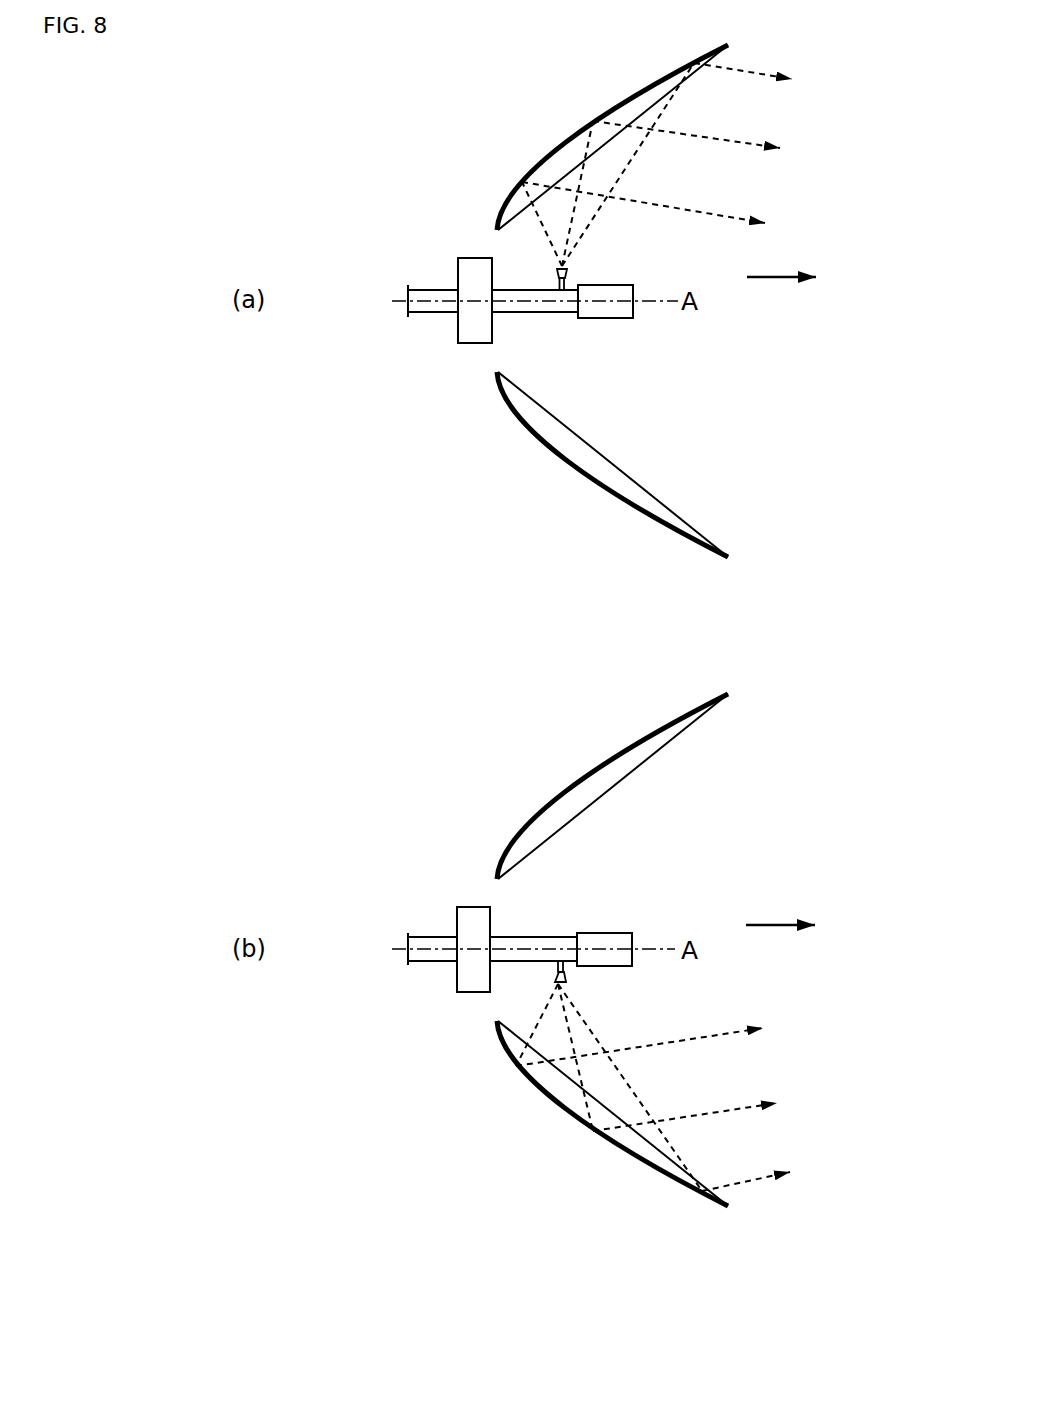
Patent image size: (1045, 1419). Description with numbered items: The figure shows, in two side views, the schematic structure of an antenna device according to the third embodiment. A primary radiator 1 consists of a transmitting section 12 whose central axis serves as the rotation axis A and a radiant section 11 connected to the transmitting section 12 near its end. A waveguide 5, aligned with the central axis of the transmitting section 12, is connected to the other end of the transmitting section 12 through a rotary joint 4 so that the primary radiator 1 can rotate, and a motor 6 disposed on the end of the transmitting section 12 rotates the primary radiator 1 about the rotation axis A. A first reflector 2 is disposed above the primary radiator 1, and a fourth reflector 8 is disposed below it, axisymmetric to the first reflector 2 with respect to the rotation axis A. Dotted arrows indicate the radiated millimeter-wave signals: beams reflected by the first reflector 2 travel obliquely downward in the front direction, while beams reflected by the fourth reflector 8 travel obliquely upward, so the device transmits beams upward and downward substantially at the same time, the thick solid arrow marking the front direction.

The primary radiator 1 is at (587, 260).
The first reflector 2 is at (545, 156).
The rotary joint 4 is at (467, 343).
The waveguide 5 is at (440, 291).
The motor 6 is at (633, 292).
The fourth reflector 8 is at (513, 419).
The radiant section 11 is at (567, 274).
The transmitting section 12 is at (525, 291).